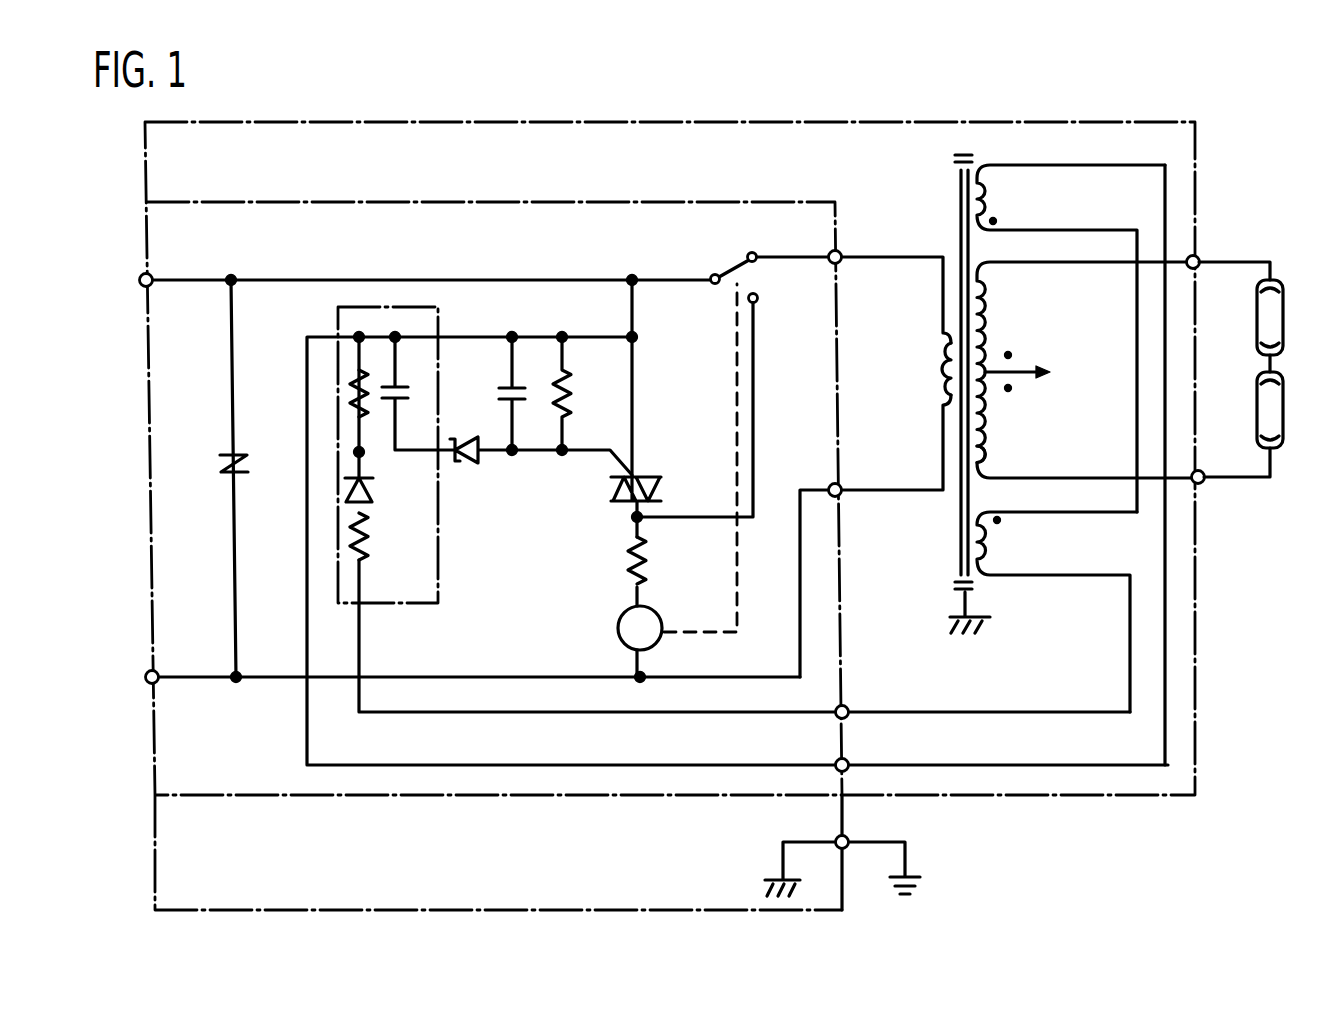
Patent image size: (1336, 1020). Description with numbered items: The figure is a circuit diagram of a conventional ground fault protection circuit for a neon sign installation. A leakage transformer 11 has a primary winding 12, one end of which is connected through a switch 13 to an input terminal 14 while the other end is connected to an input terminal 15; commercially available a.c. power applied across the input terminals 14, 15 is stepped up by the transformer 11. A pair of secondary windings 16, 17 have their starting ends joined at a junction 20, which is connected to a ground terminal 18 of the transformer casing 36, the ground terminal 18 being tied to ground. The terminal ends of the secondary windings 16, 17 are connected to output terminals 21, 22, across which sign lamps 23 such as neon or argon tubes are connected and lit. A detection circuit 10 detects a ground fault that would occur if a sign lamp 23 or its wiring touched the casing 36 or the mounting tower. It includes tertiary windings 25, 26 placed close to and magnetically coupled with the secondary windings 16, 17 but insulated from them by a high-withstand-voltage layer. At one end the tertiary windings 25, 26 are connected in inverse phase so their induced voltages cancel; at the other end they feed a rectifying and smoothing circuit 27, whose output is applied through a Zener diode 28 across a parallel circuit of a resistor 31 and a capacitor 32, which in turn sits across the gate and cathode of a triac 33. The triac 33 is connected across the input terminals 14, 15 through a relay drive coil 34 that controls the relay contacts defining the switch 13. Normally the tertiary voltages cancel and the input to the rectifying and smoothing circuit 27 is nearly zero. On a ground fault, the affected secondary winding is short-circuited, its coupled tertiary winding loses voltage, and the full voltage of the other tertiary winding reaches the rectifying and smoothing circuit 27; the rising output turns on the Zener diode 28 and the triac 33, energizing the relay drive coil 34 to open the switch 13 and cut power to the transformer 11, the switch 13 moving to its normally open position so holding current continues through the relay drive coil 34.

The detection circuit 10 is at (430, 202).
The leakage transformer 11 is at (953, 160).
The primary winding 12 is at (935, 395).
The switch 13 is at (730, 266).
The input terminal 14 is at (140, 277).
The input terminal 15 is at (146, 670).
The secondary winding 16 is at (1000, 303).
The secondary winding 17 is at (1000, 460).
The ground terminal 18 is at (848, 835).
The junction 20 is at (1000, 372).
The output terminal 21 is at (1200, 255).
The output terminal 22 is at (1203, 486).
The sign lamp 23 is at (1305, 404).
The tertiary winding 25 is at (1000, 200).
The tertiary winding 26 is at (1005, 548).
The rectifying and smoothing circuit 27 is at (403, 603).
The Zener diode 28 is at (463, 466).
The resistor 31 is at (571, 395).
The capacitor 32 is at (505, 390).
The triac 33 is at (655, 478).
The relay drive coil 34 is at (615, 630).
The transformer casing 36 is at (532, 122).